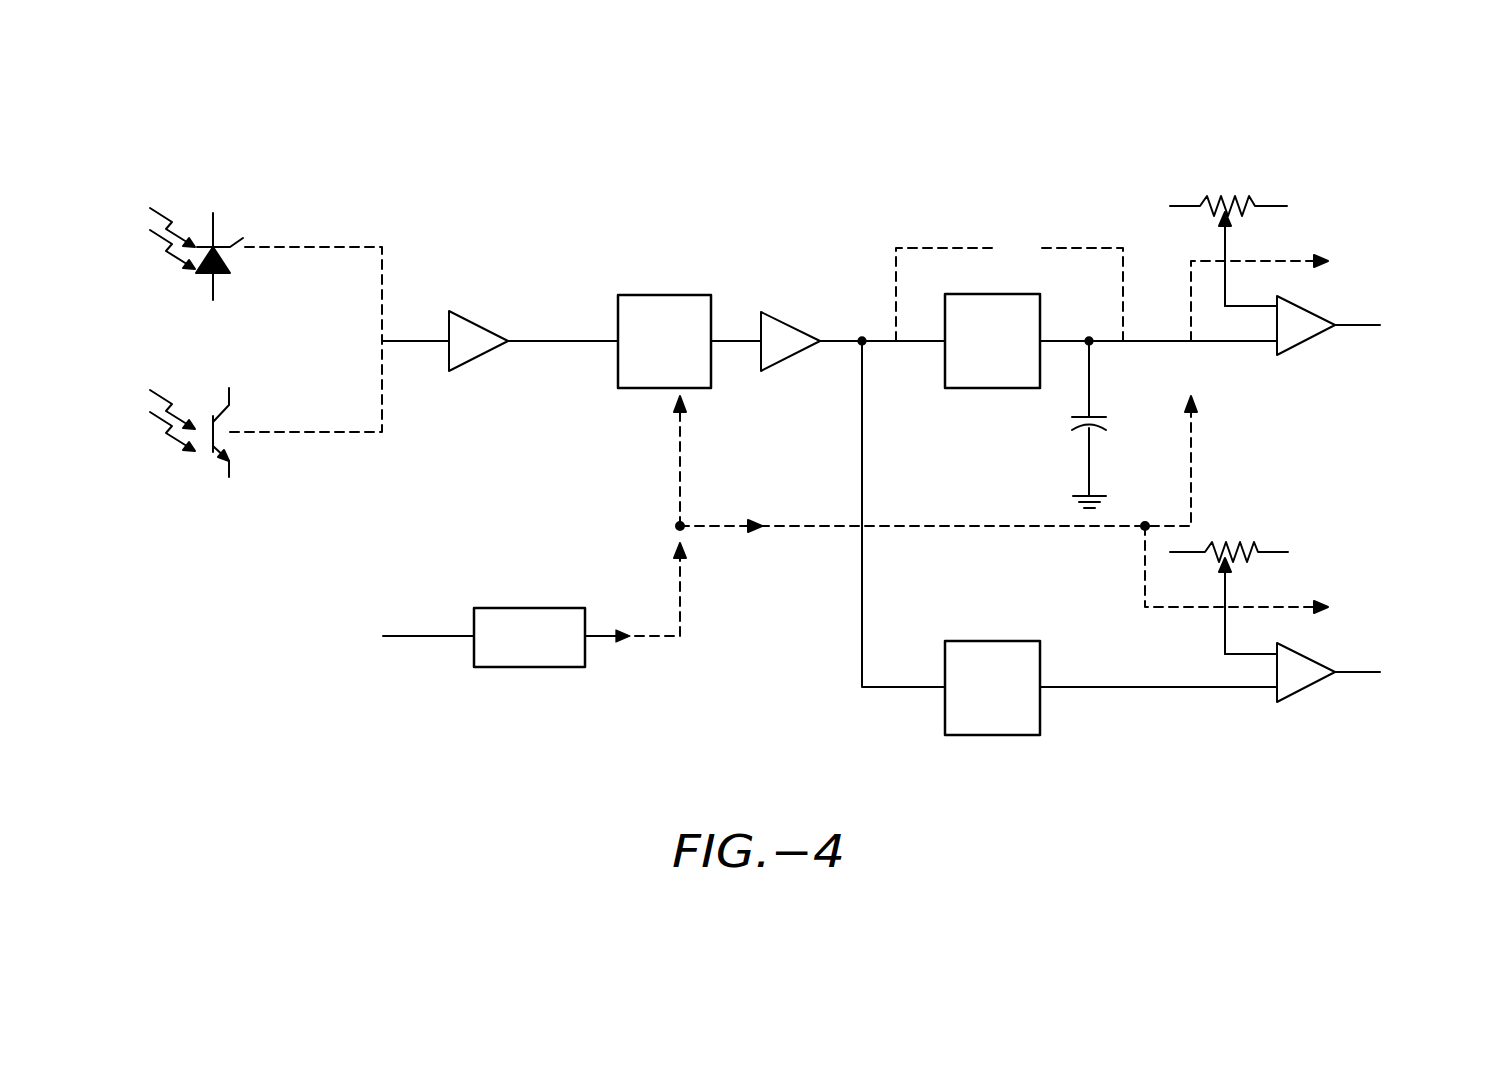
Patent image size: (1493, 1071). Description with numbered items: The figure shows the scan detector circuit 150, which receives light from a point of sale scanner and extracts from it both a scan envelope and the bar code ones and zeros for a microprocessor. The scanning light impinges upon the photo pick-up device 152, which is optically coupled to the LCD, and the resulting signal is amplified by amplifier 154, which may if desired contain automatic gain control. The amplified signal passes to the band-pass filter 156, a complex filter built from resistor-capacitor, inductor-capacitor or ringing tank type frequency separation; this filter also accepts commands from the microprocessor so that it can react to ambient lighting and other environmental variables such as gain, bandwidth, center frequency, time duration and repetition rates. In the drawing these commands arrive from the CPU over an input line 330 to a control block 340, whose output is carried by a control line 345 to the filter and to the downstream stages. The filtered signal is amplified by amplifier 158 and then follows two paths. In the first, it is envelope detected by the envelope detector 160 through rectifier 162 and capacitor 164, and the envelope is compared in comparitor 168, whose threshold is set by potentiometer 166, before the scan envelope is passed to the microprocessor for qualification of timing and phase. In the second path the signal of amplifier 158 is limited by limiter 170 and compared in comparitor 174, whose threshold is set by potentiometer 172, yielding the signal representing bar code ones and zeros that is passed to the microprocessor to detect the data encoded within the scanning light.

The scan detector circuit 150 is at (242, 152).
The photo pick-up device 152 is at (198, 263).
The amplifier 154 is at (476, 322).
The band-pass filter 156 is at (655, 295).
The amplifier 158 is at (785, 320).
The envelope detector 160 is at (1086, 372).
The rectifier 162 is at (978, 388).
The capacitor 164 is at (1106, 420).
The potentiometer 166 is at (1285, 206).
The comparitor 168 is at (1310, 358).
The limiter 170 is at (985, 735).
The potentiometer 172 is at (1272, 552).
The comparitor 174 is at (1310, 695).
The input line from CPU 330 is at (432, 636).
The control block 340 is at (498, 608).
The control line 345 is at (680, 636).